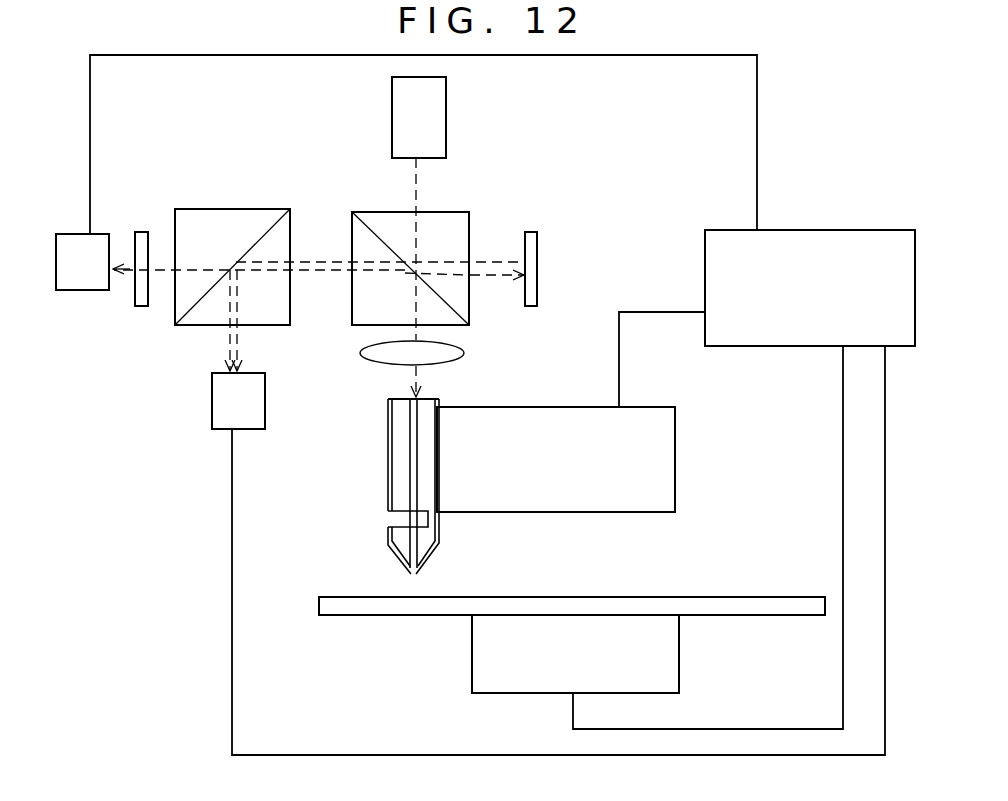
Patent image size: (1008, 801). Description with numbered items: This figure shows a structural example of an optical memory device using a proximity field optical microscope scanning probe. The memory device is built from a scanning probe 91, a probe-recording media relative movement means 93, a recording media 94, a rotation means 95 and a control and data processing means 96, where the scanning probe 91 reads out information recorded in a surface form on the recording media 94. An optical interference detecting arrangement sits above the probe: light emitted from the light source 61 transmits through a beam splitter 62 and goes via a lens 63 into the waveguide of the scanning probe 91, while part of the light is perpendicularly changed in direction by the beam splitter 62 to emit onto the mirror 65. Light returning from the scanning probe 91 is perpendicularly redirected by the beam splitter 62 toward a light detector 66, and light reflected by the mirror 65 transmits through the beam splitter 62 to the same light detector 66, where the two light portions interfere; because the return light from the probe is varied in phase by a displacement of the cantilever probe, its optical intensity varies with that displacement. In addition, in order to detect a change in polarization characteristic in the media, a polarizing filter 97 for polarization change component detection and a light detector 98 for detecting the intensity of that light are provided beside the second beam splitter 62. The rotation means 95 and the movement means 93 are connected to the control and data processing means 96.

The light source 61 is at (438, 113).
The beam splitter 62 is at (358, 215).
The lens 63 is at (452, 356).
The mirror 65 is at (535, 246).
The light detector 66 is at (216, 410).
The scanning probe 91 is at (398, 467).
The probe-recording media relative movement means 93 is at (670, 474).
The recording media 94 is at (347, 600).
The rotation means 95 is at (472, 657).
The control and data processing means 96 is at (801, 343).
The polarizing filter 97 is at (140, 300).
The light detector 98 is at (88, 284).